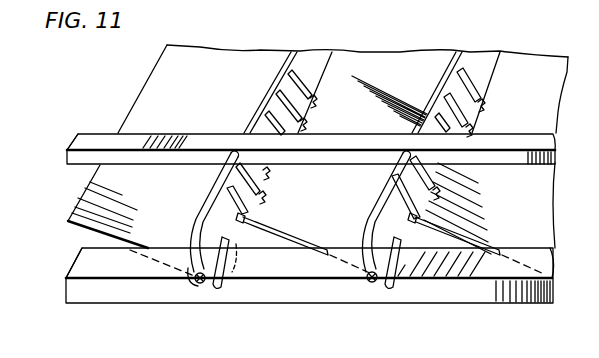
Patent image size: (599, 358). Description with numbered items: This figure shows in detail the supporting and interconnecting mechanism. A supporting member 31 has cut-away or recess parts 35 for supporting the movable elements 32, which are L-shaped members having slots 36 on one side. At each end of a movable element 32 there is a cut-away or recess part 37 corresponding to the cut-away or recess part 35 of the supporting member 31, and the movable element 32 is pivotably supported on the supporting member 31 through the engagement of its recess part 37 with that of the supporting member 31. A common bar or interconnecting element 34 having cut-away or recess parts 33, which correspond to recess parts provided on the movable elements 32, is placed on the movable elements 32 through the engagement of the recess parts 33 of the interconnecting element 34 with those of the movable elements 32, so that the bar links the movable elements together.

The supporting member 31 is at (97, 304).
The movable element 32 is at (99, 173).
The cut-away or recess part of interconnecting element 33 is at (228, 155).
The common bar or interconnecting element 34 is at (109, 140).
The cut-away or recess part of supporting member 35 is at (204, 284).
The slot 36 is at (304, 78).
The cut-away or recess part of movable element 37 is at (243, 250).